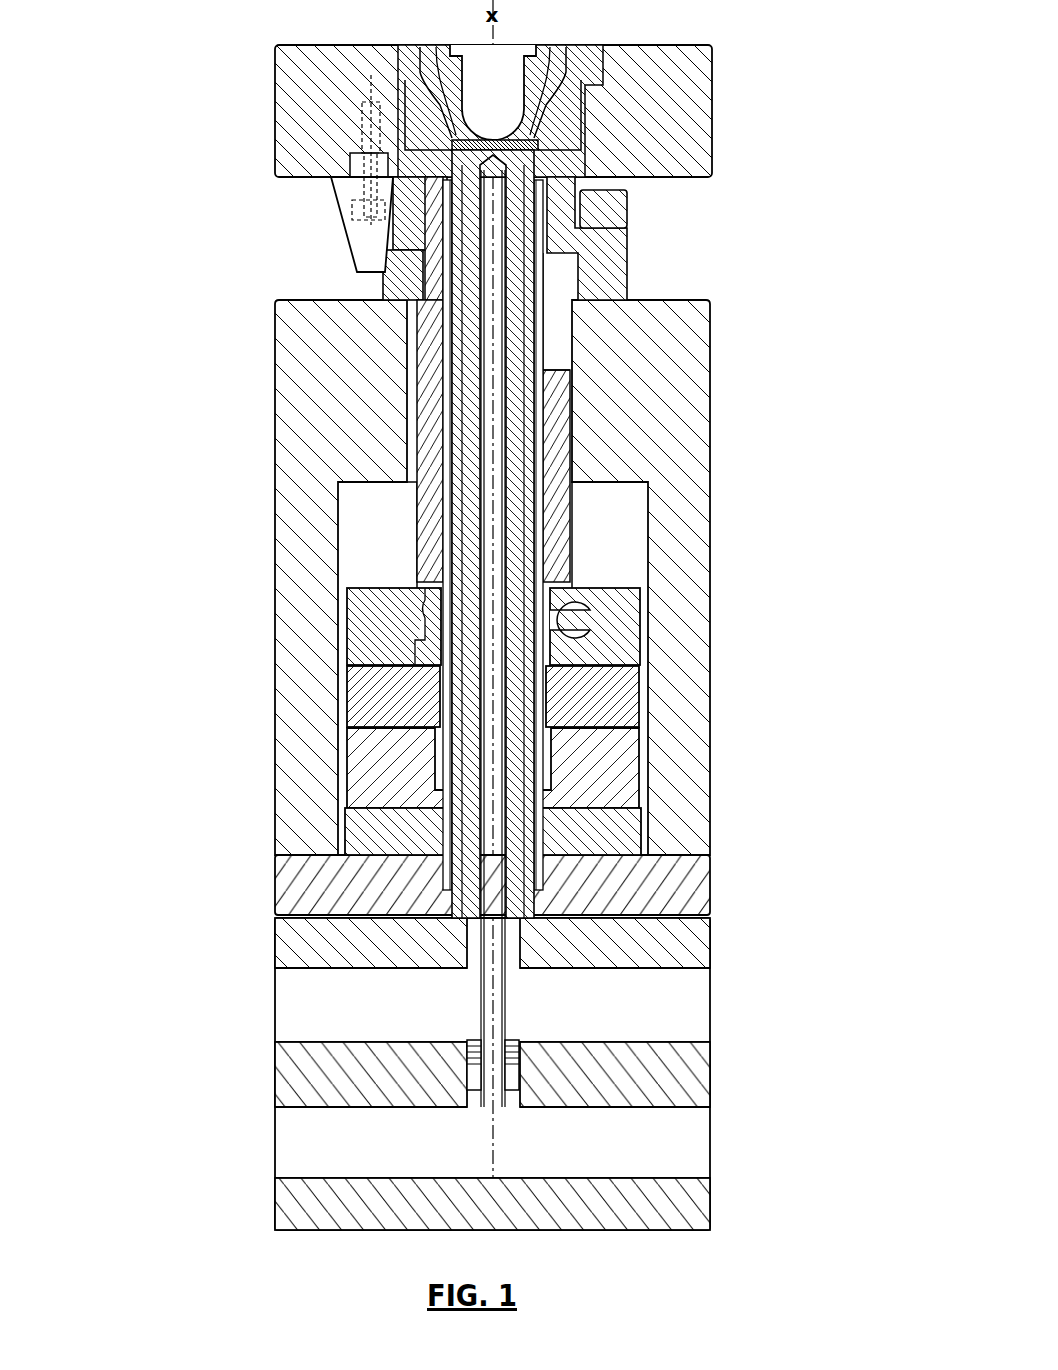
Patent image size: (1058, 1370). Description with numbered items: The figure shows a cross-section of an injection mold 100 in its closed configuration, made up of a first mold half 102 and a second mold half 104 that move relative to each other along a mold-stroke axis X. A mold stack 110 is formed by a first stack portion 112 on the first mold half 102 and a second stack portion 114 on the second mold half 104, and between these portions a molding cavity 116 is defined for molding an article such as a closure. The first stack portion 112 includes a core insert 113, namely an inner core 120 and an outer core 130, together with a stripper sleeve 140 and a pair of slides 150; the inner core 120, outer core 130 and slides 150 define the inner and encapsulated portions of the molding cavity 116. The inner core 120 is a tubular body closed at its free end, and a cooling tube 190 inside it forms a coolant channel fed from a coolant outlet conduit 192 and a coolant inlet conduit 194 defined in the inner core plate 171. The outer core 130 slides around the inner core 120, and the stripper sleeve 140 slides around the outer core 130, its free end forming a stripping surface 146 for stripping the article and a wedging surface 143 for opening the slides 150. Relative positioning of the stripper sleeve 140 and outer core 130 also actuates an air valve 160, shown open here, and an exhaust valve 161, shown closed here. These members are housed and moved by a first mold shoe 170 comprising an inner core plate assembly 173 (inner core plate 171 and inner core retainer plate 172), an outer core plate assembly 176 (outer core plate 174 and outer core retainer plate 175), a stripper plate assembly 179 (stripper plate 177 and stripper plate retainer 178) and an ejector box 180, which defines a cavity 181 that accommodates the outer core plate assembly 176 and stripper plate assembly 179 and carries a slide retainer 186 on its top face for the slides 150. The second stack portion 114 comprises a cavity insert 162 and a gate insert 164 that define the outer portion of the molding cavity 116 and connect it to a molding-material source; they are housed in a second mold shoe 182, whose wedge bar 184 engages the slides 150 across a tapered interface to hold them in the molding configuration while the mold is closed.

The injection mold 100 is at (131, 255).
The first mold half 102 is at (247, 353).
The second mold half 104 is at (244, 232).
The mold stack 110 is at (884, 580).
The first stack portion 112 is at (814, 362).
The core insert 113 is at (759, 660).
The second stack portion 114 is at (814, 88).
The molding cavity 116 is at (547, 165).
The inner core 120 is at (522, 767).
The outer core 130 is at (537, 700).
The stripper sleeve 140 is at (565, 560).
The wedging surface 143 is at (445, 238).
The stripping surface 146 is at (447, 230).
The pair of slides 150 is at (565, 242).
The air valve 160 is at (433, 580).
The exhaust valve 161 is at (449, 646).
The cavity insert 162 is at (563, 147).
The gate insert 164 is at (525, 123).
The first mold shoe 170 is at (128, 967).
The inner core plate 171 is at (315, 945).
The inner core retainer plate 172 is at (315, 888).
The inner core plate assembly 173 is at (189, 878).
The outer core plate 174 is at (365, 825).
The outer core retainer plate 175 is at (370, 768).
The outer core plate assembly 176 is at (189, 745).
The stripper plate 177 is at (370, 690).
The stripper plate retainer 178 is at (360, 637).
The stripper plate assembly 179 is at (189, 630).
The ejector box 180 is at (300, 578).
The cavity 181 is at (493, 668).
The second mold shoe 182 is at (290, 127).
The wedge bar 184 is at (348, 195).
The slide retainer 186 is at (387, 287).
The cooling tube 190 is at (508, 1012).
The coolant outlet conduit 192 is at (680, 1140).
The coolant inlet conduit 194 is at (680, 1003).